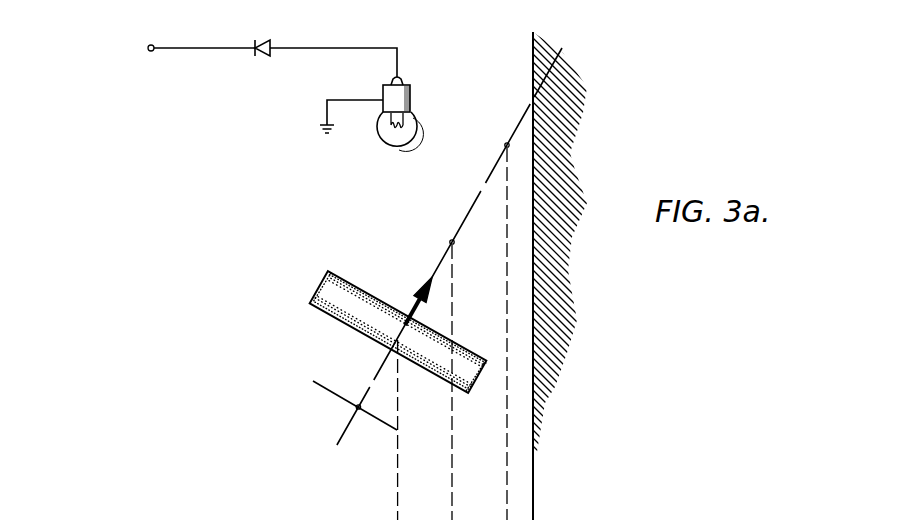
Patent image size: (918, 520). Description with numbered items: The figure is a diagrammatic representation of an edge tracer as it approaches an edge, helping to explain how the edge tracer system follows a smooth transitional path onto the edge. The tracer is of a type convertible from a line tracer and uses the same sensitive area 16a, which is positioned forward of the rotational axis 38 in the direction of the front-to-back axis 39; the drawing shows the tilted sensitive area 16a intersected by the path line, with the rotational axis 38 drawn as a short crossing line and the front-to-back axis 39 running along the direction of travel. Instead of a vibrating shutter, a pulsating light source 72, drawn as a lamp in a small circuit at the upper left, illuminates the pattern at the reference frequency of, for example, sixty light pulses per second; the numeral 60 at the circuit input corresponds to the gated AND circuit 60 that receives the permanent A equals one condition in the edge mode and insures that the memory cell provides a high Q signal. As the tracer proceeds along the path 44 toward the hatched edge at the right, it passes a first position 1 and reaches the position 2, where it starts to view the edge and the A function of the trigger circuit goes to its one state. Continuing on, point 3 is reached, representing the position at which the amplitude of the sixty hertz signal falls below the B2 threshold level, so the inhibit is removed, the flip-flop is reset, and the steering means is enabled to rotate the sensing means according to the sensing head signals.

The position on path 1 is at (398, 333).
The position where edge is first viewed 2 is at (450, 242).
The position where signal falls below threshold 3 is at (506, 143).
The sensitive area 16a is at (328, 272).
The rotational axis 38 is at (356, 407).
The front-to-back axis 39 is at (378, 367).
The path 44 is at (481, 191).
The gated AND circuit 60 is at (144, 48).
The pulsating light source 72 is at (412, 99).